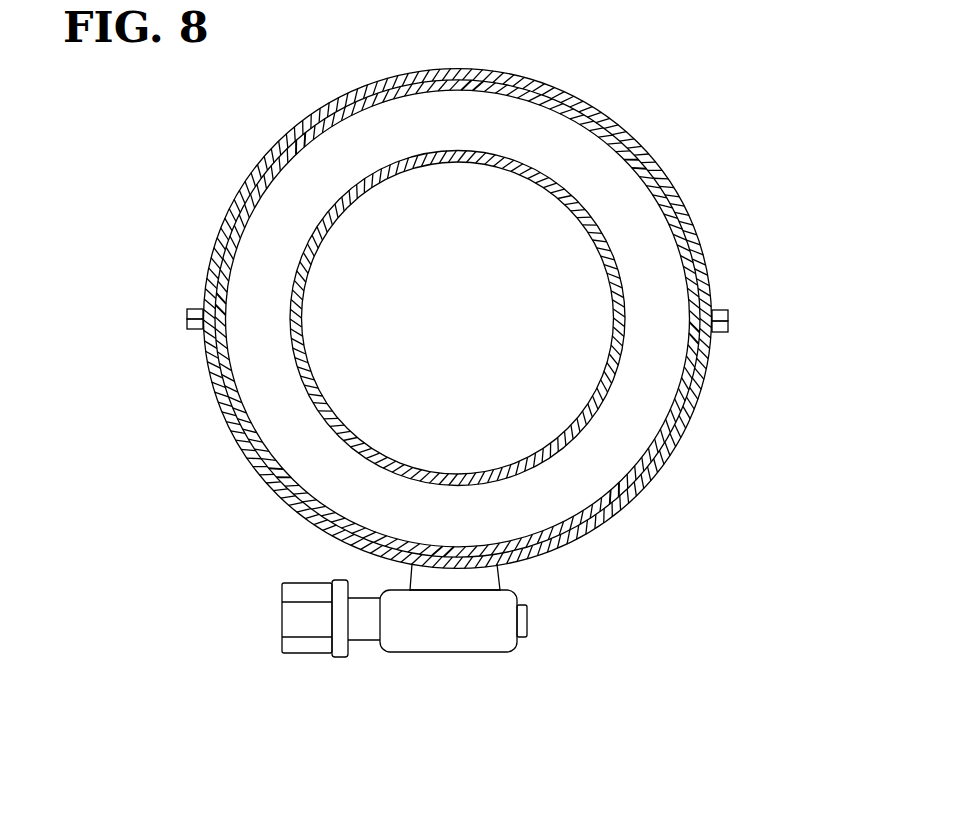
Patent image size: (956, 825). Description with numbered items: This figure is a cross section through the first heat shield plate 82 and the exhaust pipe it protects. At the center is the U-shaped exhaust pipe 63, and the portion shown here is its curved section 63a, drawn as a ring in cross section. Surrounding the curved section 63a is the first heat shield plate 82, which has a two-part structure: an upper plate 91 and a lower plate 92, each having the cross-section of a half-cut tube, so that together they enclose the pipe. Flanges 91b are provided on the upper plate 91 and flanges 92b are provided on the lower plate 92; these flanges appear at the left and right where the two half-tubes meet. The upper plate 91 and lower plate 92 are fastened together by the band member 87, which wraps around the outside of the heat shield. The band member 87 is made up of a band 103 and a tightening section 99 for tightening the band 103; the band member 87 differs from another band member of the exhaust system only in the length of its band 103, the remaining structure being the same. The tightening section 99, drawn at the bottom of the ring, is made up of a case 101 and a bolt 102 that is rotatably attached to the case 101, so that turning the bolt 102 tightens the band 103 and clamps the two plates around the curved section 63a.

The U-shaped exhaust pipe 63 is at (348, 213).
The curved section 63a is at (305, 337).
The first heat shield plate 82 is at (657, 160).
The band member 87 is at (215, 407).
The upper plate 91 is at (325, 118).
The flanges 91b is at (190, 307).
The lower plate 92 is at (283, 475).
The flanges 92b is at (190, 331).
The tightening section 99 is at (282, 610).
The case 101 is at (483, 652).
The bolt 102 is at (282, 640).
The band 103 is at (692, 427).